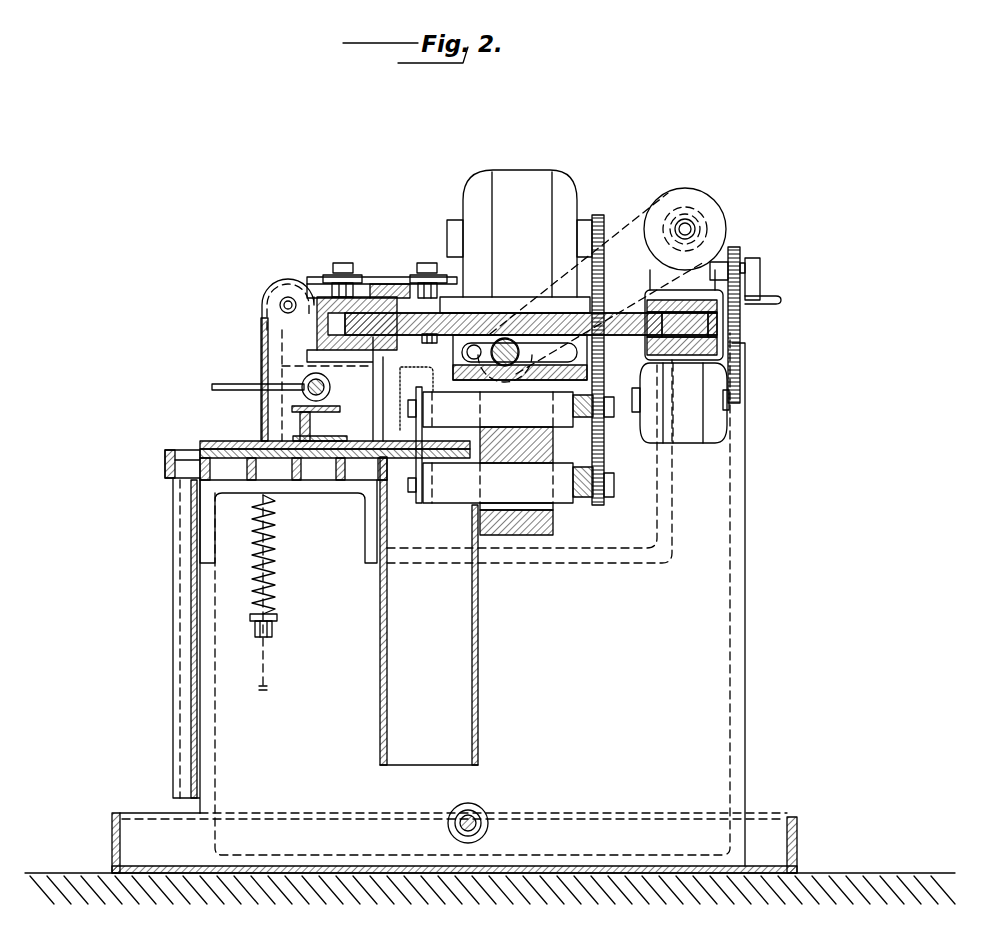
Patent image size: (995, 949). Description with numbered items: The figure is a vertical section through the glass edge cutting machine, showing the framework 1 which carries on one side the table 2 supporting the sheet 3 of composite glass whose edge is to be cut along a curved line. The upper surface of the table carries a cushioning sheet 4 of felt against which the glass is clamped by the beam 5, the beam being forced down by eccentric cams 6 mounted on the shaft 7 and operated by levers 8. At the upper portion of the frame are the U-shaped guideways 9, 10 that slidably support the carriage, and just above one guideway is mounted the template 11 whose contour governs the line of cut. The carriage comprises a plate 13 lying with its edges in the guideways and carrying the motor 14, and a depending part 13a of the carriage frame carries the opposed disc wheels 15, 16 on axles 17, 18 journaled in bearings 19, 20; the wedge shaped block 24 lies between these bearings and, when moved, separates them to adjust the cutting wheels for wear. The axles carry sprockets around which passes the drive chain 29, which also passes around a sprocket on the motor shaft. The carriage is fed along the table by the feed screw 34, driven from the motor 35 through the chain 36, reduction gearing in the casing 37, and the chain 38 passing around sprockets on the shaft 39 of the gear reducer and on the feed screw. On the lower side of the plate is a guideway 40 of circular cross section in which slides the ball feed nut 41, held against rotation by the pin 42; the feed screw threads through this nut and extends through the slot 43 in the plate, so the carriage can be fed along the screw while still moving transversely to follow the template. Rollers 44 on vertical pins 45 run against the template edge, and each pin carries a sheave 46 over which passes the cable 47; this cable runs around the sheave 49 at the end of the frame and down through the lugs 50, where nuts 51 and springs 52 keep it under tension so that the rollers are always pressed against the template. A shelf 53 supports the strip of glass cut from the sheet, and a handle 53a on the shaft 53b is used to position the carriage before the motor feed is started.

The framework 1 is at (748, 690).
The table 2 is at (196, 466).
The sheet 3 is at (240, 443).
The cushioning sheet 4 is at (205, 447).
The beam 5 is at (300, 421).
The eccentric cam 6 is at (322, 400).
The shaft 7 is at (310, 384).
The lever 8 is at (232, 384).
The guideway 9 is at (325, 325).
The guideway 10 is at (712, 318).
The template 11 is at (362, 277).
The plate 13 is at (602, 312).
The part of the carriage frame 13a is at (526, 537).
The motor 14 is at (520, 182).
The disc wheel 15 is at (338, 441).
The disc wheel 16 is at (430, 518).
The axle 17 is at (602, 405).
The axle 18 is at (338, 263).
The bearing 19 is at (560, 415).
The bearing 20 is at (560, 490).
The wedge shaped block 24 is at (522, 452).
The drive chain 29 is at (585, 418).
The feed screw 34 is at (505, 365).
The motor 35 is at (690, 420).
The chain 36 is at (742, 326).
The casing 37 is at (710, 207).
The chain 38 is at (602, 235).
The shaft 39 is at (686, 222).
The guideway 40 is at (440, 346).
The ball feed nut 41 is at (492, 345).
The pin 42 is at (514, 340).
The slot 43 is at (478, 362).
The roller 44 is at (456, 320).
The vertical pin 45 is at (470, 340).
The sheave 46 is at (420, 268).
The cable 47 is at (398, 283).
The sheave 49 is at (286, 282).
The lug 50 is at (250, 487).
The nut 51 is at (280, 628).
The spring 52 is at (278, 548).
The shelf 53 is at (428, 460).
The handle 53a is at (775, 300).
The shaft 53b is at (760, 268).